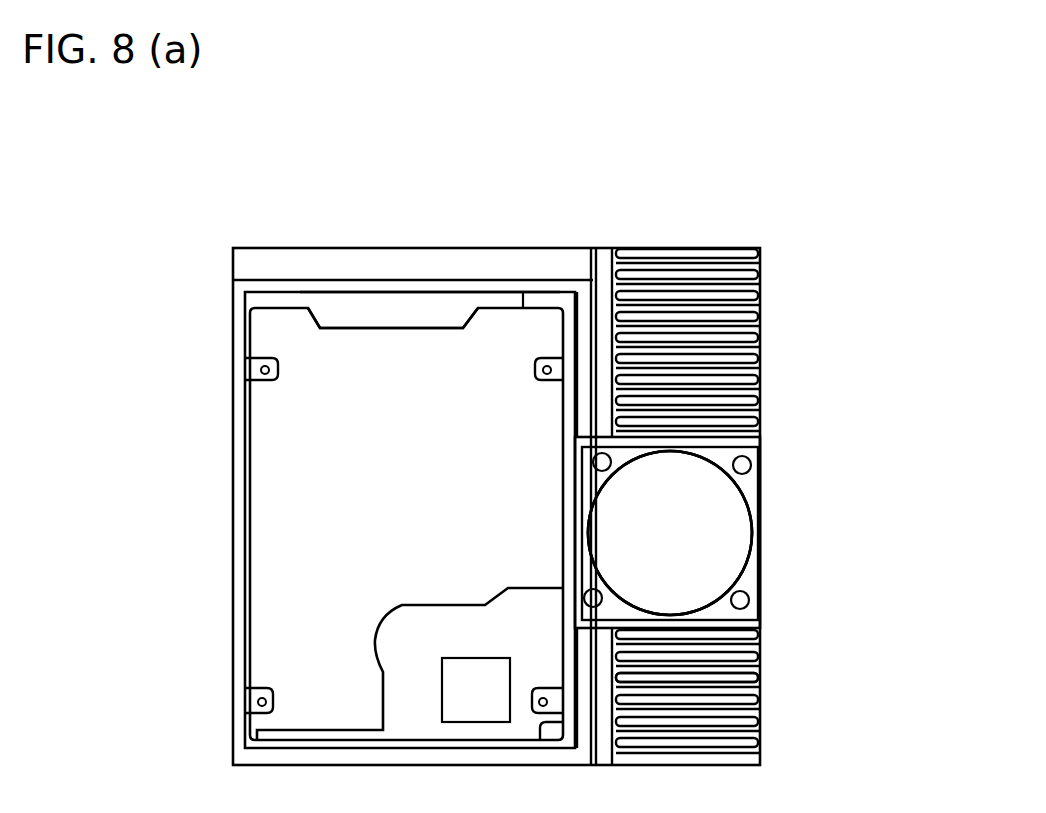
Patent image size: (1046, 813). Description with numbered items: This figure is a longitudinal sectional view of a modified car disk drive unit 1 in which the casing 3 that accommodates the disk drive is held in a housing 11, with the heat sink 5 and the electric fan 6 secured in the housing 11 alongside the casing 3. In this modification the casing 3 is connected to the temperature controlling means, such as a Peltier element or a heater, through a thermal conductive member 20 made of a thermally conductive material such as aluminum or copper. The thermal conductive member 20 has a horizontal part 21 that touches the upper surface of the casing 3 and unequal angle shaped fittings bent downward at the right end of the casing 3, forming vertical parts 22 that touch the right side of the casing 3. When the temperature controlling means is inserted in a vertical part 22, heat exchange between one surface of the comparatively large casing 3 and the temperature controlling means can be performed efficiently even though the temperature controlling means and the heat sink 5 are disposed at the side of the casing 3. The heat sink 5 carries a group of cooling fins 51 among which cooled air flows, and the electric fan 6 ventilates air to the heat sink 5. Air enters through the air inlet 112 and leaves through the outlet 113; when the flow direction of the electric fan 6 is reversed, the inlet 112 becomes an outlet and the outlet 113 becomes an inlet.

The car disk drive unit 1 is at (798, 310).
The casing 3 is at (268, 480).
The heat sink 5 is at (708, 242).
The electric fan 6 is at (762, 525).
The housing 11 is at (232, 405).
The thermal conductive member 20 is at (387, 290).
The horizontal part 21 is at (365, 318).
The vertical part 22 is at (583, 312).
The cooling fin 51 is at (750, 677).
The air inlet 112 is at (722, 567).
The outlet 113 is at (744, 543).